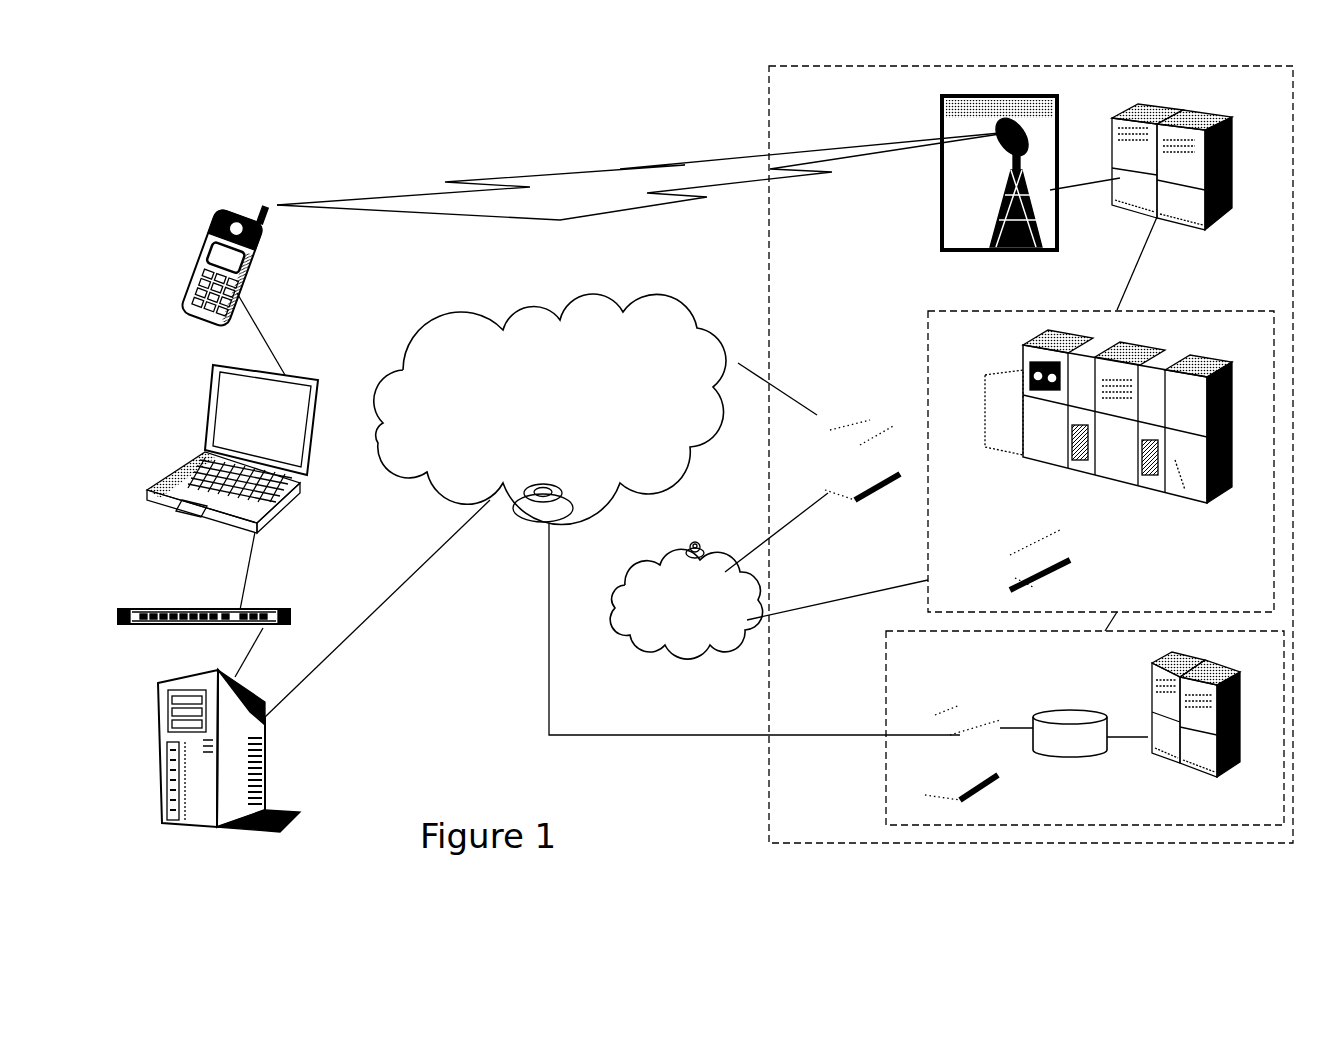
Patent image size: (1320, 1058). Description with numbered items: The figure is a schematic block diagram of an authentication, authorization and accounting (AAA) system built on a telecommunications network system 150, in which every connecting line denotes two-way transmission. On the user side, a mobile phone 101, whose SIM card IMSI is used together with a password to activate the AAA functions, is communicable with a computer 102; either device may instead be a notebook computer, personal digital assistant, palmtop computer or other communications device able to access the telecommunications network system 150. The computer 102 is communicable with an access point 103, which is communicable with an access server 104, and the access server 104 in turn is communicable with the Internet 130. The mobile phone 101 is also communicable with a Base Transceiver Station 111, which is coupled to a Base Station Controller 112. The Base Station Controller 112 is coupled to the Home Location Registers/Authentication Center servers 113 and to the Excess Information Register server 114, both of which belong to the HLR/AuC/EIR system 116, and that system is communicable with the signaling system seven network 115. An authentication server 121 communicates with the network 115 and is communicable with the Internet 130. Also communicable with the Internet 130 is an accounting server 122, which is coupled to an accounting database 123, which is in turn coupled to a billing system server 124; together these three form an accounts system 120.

The mobile phone 101 is at (215, 212).
The computer 102 is at (213, 403).
The access point 103 is at (182, 610).
The access server 104 is at (177, 825).
The Base Transceiver Station (BTS) 111 is at (1007, 183).
The Base Station Controller (BSC) 112 is at (1212, 227).
The Home Location Registers/Authentication Center (HLR/AuC) servers 113 is at (1200, 367).
The Excess Information Register (EIR) server 114 is at (1013, 542).
The signaling system 7 (SS7) network 115 is at (660, 640).
The HLR/AuC/EIR system 116 is at (928, 525).
The accounts system 120 is at (1044, 728).
The authentication server 121 is at (853, 395).
The accounting server 122 is at (1002, 767).
The accounting database 123 is at (1065, 708).
The billing system server 124 is at (1217, 777).
The Internet 130 is at (457, 315).
The telecommunications network system 150 is at (766, 100).